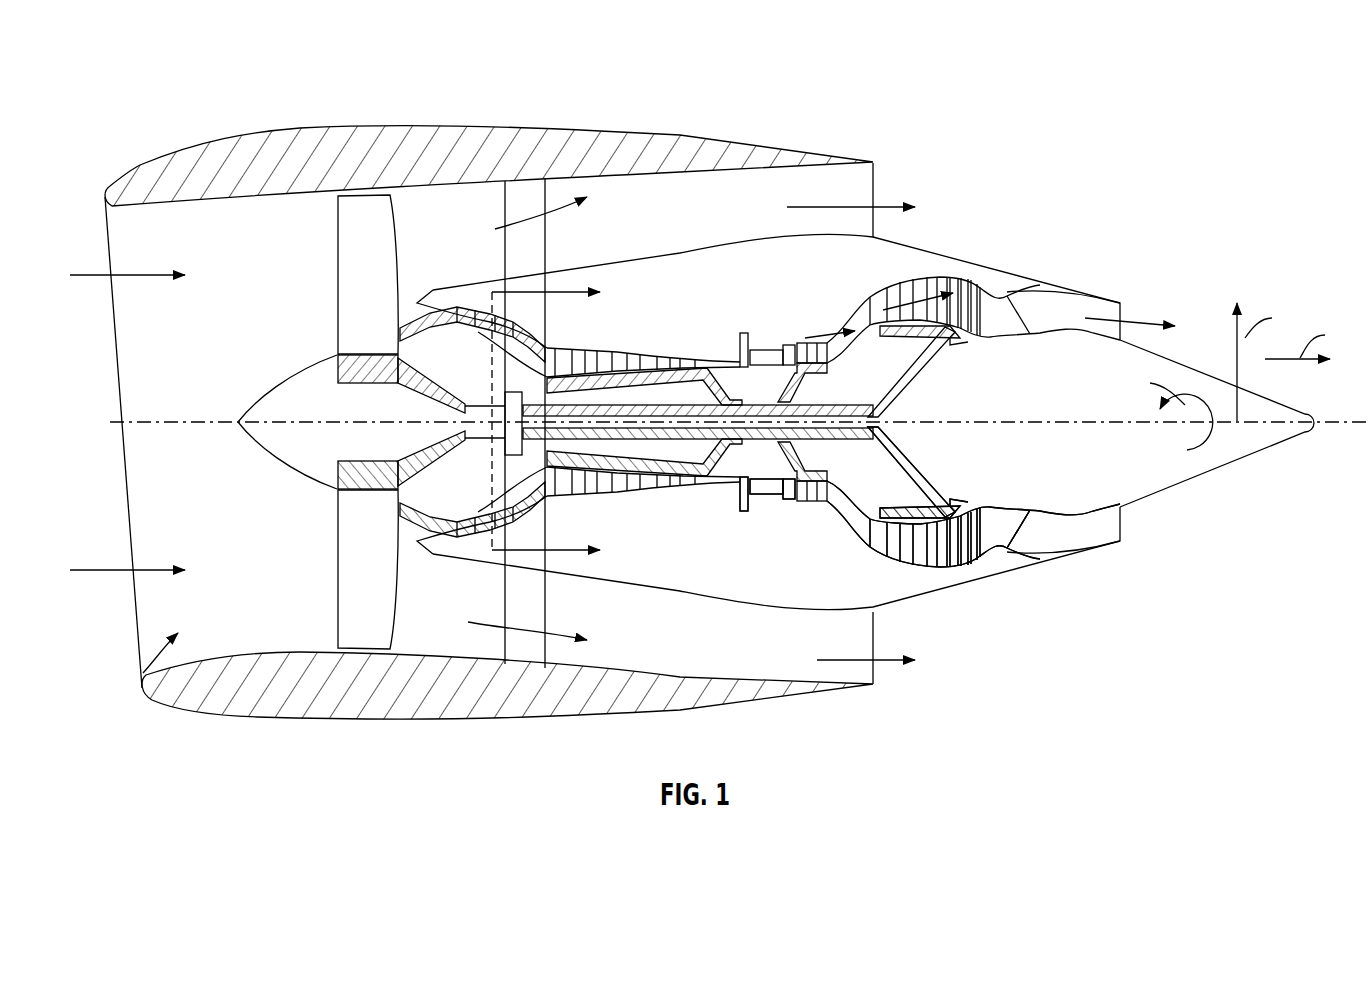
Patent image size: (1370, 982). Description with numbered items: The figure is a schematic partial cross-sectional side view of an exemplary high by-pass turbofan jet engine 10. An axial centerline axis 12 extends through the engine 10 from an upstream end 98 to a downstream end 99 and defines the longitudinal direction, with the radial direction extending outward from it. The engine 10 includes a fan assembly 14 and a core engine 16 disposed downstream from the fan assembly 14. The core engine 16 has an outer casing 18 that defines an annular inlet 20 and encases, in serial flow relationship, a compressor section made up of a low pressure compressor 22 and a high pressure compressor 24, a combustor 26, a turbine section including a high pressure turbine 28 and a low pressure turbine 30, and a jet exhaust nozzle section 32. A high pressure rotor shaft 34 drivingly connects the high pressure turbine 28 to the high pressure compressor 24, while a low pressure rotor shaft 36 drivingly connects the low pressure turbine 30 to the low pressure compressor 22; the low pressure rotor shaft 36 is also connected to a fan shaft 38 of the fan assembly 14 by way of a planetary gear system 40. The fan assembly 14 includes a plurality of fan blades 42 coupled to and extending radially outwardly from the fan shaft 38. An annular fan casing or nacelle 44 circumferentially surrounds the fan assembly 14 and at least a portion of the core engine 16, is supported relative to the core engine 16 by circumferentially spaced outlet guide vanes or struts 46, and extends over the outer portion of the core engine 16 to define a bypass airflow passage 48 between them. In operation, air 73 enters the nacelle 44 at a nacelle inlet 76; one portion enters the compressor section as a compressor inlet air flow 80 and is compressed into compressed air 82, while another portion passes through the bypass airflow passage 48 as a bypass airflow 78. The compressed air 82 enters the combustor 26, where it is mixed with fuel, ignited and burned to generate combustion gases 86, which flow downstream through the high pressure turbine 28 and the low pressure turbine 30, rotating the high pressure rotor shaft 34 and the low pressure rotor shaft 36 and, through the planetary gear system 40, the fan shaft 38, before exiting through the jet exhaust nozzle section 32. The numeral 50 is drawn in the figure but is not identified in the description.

The high by-pass turbofan jet engine 10 is at (720, 390).
The axial centerline axis 12 is at (1033, 421).
The fan assembly 14 is at (397, 217).
The core engine 16 is at (734, 238).
The outer casing 18 is at (693, 597).
The annular inlet 20 is at (447, 540).
The low pressure compressor 22 is at (468, 547).
The high pressure compressor 24 is at (628, 487).
The combustor 26 is at (765, 500).
The high pressure turbine 28 is at (823, 500).
The low pressure turbine 30 is at (955, 573).
The jet exhaust nozzle section 32 is at (1035, 537).
The high pressure rotor shaft 34 is at (807, 373).
The low pressure rotor shaft 36 is at (920, 370).
The fan shaft 38 is at (432, 393).
The planetary gear system 40 is at (480, 370).
The fan blades 42 is at (352, 300).
The nacelle 44 is at (264, 131).
The outlet guide vanes or struts 46 is at (537, 192).
The bypass airflow passage 48 is at (680, 209).
The shaft 50 is at (567, 305).
The air 73 is at (153, 274).
The nacelle inlet 76 is at (143, 673).
The bypass airflow 78 is at (557, 213).
The compressor inlet air flow 80 is at (417, 302).
The compressed air 82 is at (740, 352).
The combustion gases 86 is at (932, 296).
The upstream end 98 is at (106, 478).
The downstream end 99 is at (1362, 478).